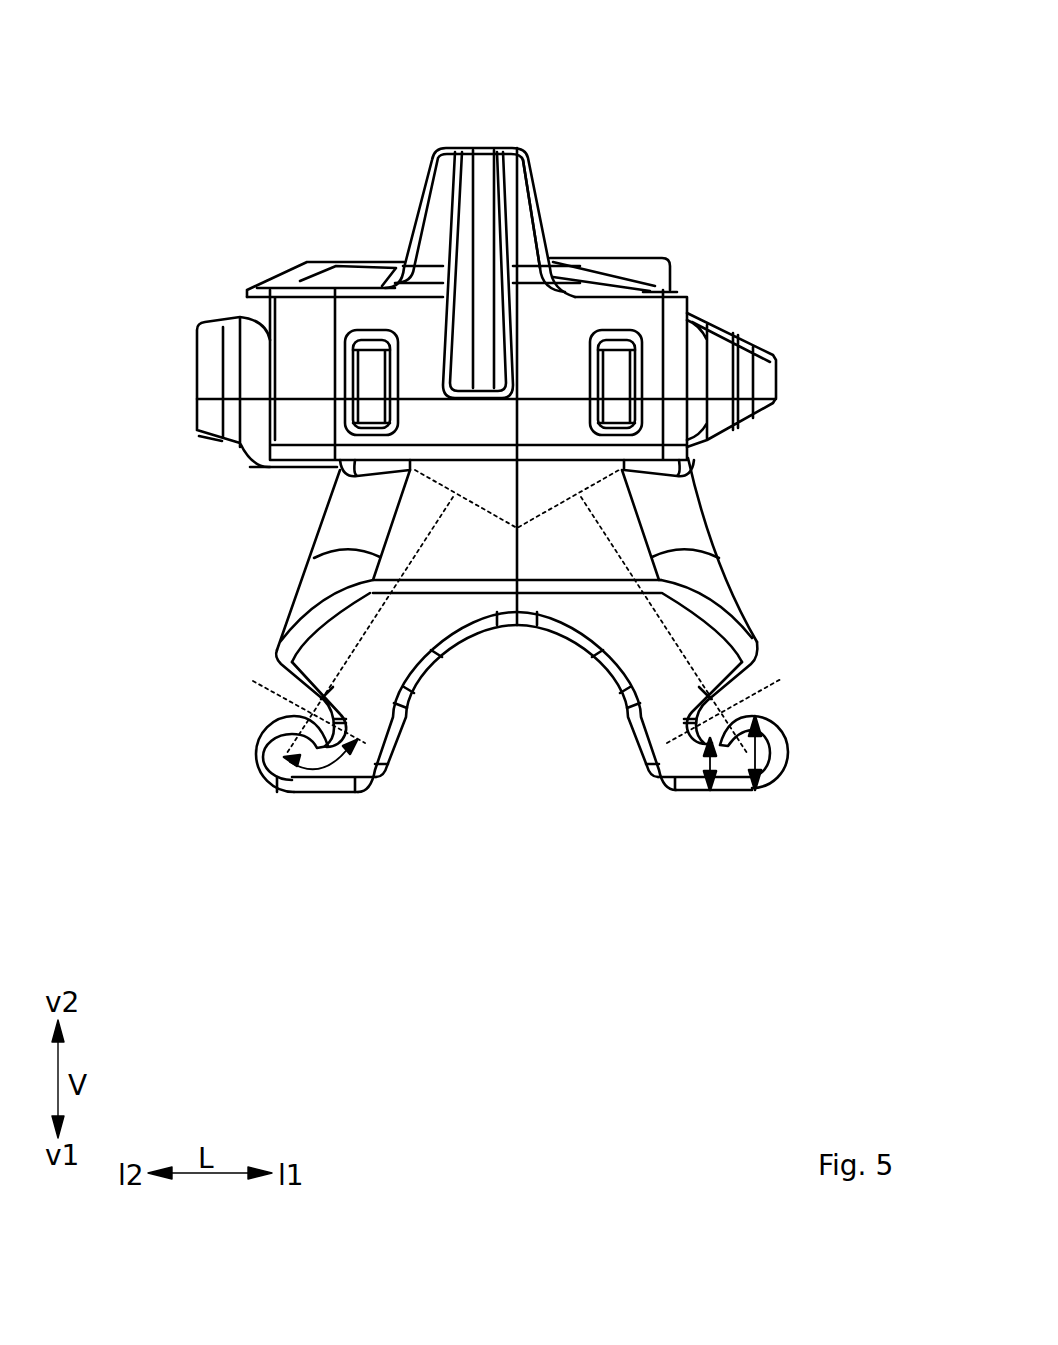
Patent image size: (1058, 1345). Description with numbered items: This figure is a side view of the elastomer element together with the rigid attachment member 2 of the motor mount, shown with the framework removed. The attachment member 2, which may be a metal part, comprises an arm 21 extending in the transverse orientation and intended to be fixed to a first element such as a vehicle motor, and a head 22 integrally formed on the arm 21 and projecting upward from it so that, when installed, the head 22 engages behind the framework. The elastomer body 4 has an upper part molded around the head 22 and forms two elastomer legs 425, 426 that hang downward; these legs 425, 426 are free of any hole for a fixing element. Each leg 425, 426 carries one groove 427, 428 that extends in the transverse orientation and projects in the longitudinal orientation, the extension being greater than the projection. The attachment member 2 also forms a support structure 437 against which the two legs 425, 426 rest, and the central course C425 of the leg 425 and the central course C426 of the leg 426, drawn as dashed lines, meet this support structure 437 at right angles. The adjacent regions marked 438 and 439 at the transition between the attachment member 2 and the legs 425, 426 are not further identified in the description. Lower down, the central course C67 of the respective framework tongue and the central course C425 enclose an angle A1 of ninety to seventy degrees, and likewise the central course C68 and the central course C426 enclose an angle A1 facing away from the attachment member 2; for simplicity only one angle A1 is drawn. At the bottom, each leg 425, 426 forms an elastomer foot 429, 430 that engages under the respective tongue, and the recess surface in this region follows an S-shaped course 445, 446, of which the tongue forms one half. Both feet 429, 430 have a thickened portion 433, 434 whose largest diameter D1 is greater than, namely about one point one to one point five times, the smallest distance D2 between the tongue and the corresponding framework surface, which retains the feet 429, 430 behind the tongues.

The attachment member 2 is at (420, 132).
The arm 21 is at (648, 258).
The head 22 is at (536, 173).
The elastomer body 4 is at (228, 303).
The left lip 439 is at (415, 478).
The support structure 437 is at (450, 490).
The central course of elastomer leg C426 is at (440, 522).
The right lip 438 is at (612, 478).
The central course of elastomer leg C425 is at (605, 523).
The groove 428 is at (292, 670).
The central course of tongue C68 is at (253, 681).
The S-shaped course 446 is at (246, 735).
The elastomer foot 430 is at (258, 770).
The thickened portion 434 is at (264, 789).
The angle A1 is at (326, 768).
The elastomer leg 426 is at (393, 752).
The groove 427 is at (742, 672).
The central course of tongue C67 is at (760, 695).
The elastomer foot 429 is at (788, 765).
The thickened portion 433 is at (778, 783).
The S-shaped course 445 is at (770, 787).
The elastomer leg 425 is at (632, 730).
The largest diameter D1 is at (760, 747).
The smallest distance D2 is at (703, 793).